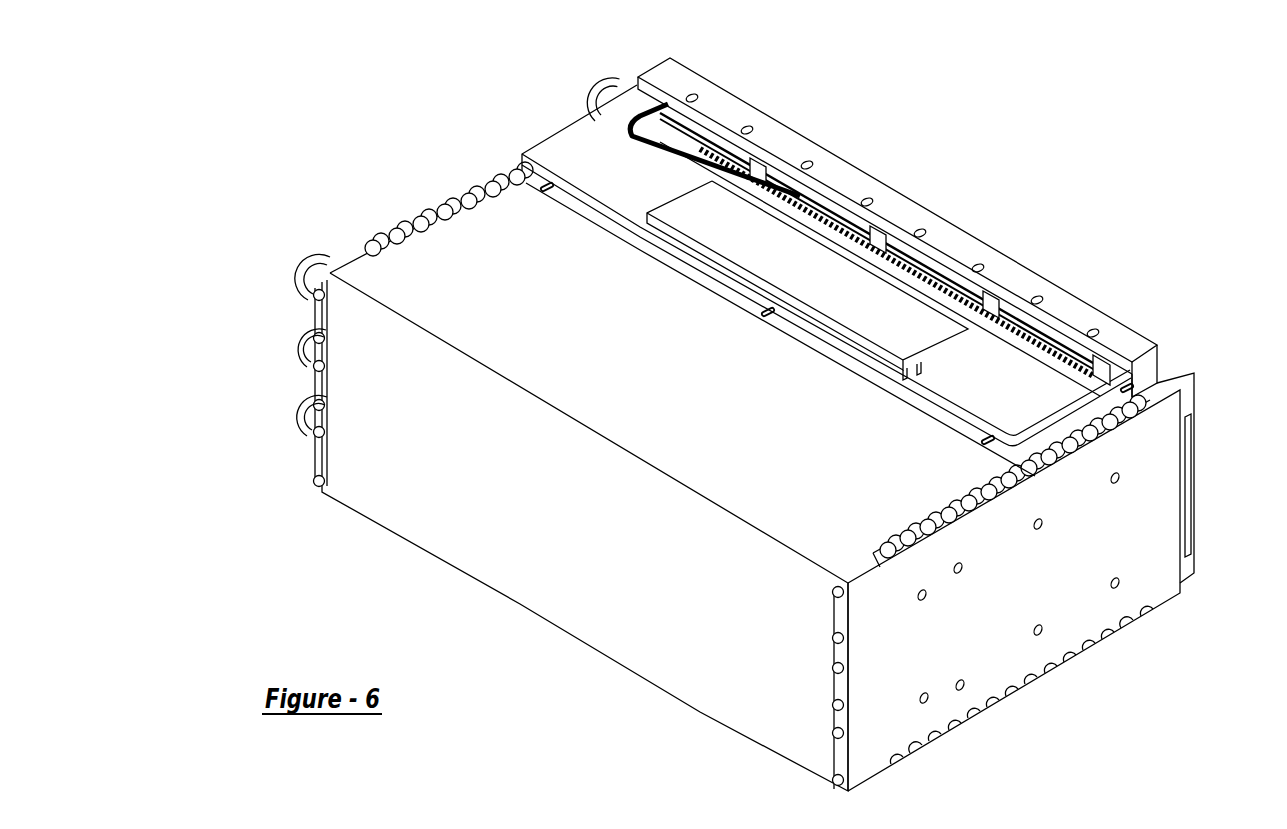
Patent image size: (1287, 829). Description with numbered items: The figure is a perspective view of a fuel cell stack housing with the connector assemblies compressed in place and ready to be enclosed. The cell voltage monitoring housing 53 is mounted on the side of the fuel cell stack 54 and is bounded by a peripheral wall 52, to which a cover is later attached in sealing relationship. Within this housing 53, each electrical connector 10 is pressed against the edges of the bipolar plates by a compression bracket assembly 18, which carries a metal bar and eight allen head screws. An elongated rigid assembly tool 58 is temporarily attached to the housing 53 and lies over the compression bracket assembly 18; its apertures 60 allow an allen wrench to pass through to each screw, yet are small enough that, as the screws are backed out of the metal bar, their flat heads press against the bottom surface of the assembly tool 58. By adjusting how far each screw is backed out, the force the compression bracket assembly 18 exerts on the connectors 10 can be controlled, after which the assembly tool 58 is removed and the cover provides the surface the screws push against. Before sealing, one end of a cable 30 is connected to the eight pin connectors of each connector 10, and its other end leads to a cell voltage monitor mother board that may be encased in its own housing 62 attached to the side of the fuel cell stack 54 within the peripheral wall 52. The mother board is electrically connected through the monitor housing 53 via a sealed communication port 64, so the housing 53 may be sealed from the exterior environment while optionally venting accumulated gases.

The connector 10 is at (600, 93).
The compression bracket assembly 18 is at (948, 280).
The cable 30 is at (660, 150).
The peripheral wall 52 is at (1147, 372).
The monitor housing 53 is at (565, 118).
The fuel cell stack 54 is at (640, 618).
The assembly tool 58 is at (897, 227).
The apertures 60 is at (752, 129).
The mother board housing 62 is at (820, 300).
The sealed communication port 64 is at (497, 180).